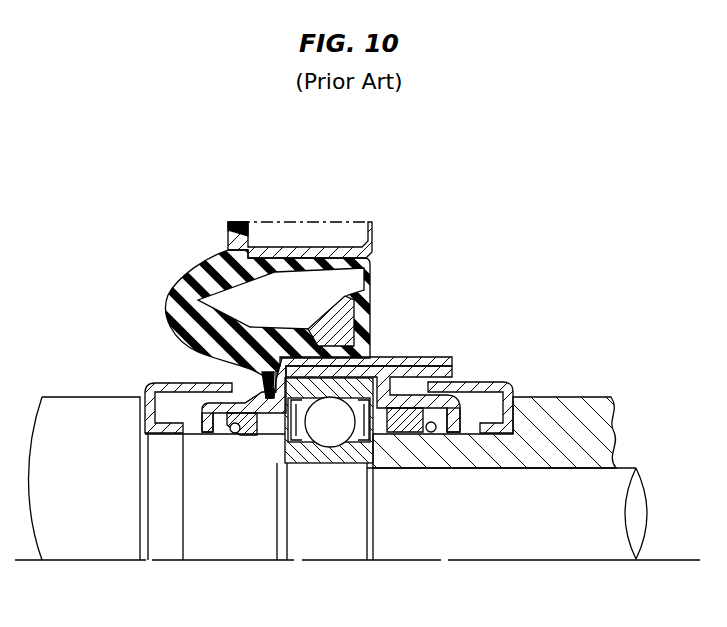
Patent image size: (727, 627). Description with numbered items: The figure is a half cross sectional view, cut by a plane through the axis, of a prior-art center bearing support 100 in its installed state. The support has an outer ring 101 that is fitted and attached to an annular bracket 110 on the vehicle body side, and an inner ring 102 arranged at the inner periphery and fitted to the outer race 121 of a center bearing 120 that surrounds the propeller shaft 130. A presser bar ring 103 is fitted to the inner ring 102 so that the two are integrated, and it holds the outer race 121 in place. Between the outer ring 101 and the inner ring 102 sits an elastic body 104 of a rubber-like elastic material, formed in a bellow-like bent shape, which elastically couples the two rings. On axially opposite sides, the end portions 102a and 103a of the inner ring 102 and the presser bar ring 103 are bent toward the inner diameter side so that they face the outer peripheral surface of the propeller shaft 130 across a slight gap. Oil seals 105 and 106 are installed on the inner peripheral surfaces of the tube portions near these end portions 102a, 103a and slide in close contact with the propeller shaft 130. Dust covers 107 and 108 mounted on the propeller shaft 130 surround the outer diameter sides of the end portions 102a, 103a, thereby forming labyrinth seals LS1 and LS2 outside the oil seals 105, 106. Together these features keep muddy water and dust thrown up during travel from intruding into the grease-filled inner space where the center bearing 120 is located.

The center bearing support 100 is at (294, 318).
The outer ring 101 is at (307, 246).
The inner ring 102 is at (321, 399).
The end portion 102a is at (205, 438).
The presser bar ring 103 is at (321, 408).
The end portion 103a is at (455, 436).
The elastic body 104 is at (185, 282).
The oil seal 105 is at (237, 436).
The oil seal 106 is at (430, 440).
The dust cover 107 is at (190, 383).
The dust cover 108 is at (468, 382).
The annular bracket 110 is at (333, 225).
The center bearing 120 is at (327, 470).
The outer race 121 is at (281, 328).
The propeller shaft 130 is at (600, 390).
The labyrinth seal LS1 is at (172, 403).
The labyrinth seal LS2 is at (490, 406).